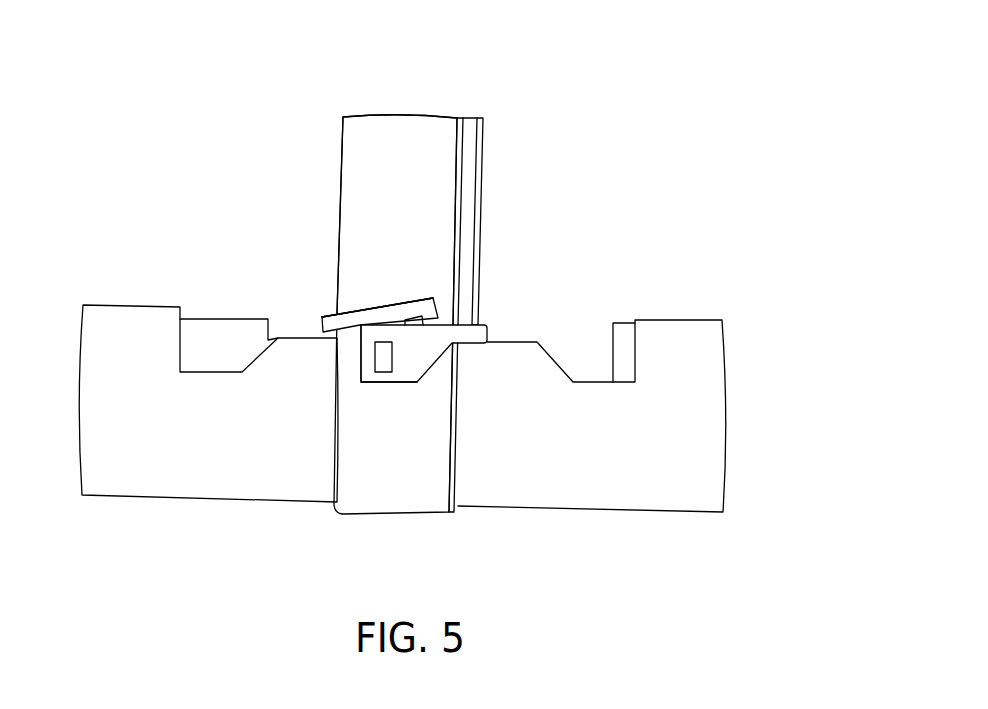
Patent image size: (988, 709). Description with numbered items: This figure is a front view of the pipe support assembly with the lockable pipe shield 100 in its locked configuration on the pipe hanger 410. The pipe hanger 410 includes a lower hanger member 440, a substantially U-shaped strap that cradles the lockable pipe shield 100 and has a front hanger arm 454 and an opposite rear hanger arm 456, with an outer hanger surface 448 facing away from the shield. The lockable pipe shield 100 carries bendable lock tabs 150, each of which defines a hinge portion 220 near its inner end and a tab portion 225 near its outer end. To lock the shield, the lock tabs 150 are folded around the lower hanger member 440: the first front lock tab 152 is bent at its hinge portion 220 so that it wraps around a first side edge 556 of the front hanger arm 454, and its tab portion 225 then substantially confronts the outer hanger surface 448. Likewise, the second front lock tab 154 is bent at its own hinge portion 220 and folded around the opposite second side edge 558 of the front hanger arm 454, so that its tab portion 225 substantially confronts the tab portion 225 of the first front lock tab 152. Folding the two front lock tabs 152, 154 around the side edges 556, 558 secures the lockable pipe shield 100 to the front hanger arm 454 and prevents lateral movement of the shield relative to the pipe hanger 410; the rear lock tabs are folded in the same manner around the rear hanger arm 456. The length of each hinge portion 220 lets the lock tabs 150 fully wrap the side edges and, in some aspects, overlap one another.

The lockable pipe shield 100 is at (758, 398).
The pipe hanger 410 is at (422, 267).
The lower hanger member 440 is at (405, 287).
The outer hanger surface 448 is at (365, 160).
The front hanger arm 454 is at (370, 130).
The rear hanger arm 456 is at (470, 173).
The second side edge 558 is at (475, 212).
The first side edge 556 is at (340, 210).
The hinge portion 220 is at (391, 395).
The tab portion 225 is at (430, 308).
The lock tab 150 is at (377, 317).
The first front lock tab 152 is at (377, 317).
The second front lock tab 154 is at (417, 357).